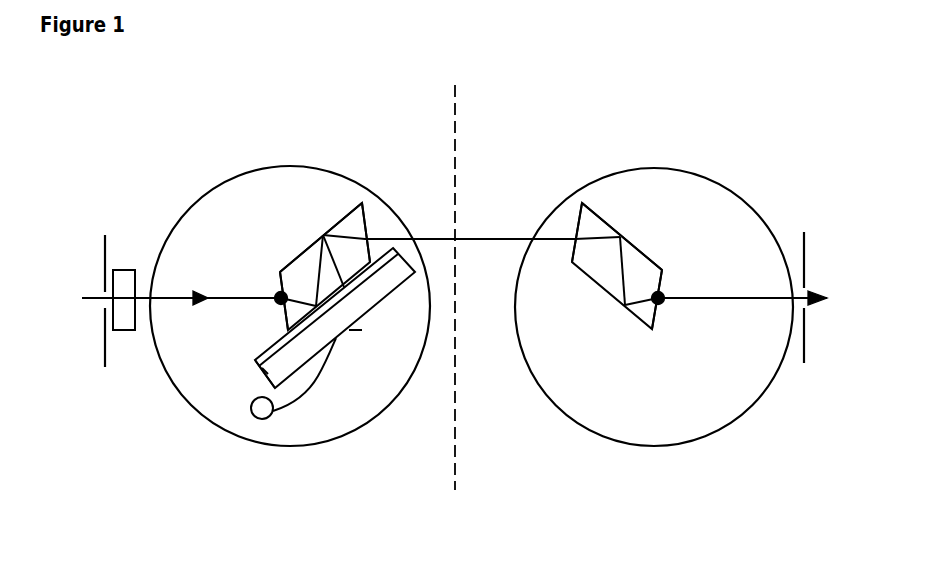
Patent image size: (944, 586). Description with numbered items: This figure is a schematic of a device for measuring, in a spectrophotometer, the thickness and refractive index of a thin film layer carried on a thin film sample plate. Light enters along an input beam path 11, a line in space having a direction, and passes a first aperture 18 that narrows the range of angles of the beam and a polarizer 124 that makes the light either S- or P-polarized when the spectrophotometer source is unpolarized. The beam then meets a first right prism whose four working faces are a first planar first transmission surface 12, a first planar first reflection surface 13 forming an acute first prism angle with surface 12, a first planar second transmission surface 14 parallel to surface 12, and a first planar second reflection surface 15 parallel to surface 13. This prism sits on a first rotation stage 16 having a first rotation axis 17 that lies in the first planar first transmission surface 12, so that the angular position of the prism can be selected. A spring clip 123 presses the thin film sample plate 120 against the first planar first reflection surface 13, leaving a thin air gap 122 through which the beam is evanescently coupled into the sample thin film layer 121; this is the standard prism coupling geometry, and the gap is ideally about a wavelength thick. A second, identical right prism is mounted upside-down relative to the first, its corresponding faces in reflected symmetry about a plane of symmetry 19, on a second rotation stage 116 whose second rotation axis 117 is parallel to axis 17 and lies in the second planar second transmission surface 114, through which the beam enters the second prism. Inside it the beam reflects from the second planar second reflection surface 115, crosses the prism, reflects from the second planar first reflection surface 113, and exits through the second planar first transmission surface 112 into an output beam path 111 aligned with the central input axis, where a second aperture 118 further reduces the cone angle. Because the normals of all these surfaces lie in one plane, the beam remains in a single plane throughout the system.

The input beam path 11 is at (177, 293).
The first planar first transmission surface 12 is at (271, 283).
The first planar first reflection surface 13 is at (327, 293).
The first planar second transmission surface 14 is at (335, 218).
The first planar second reflection surface 15 is at (370, 227).
The first rotation stage 16 is at (290, 306).
The first rotation axis 17 is at (275, 282).
The first aperture 18 is at (94, 284).
The plane of symmetry 19 is at (441, 272).
The polarizing layer 120 is at (266, 368).
The sample thin film layer 121 is at (255, 361).
The air gap 122 is at (348, 288).
The spring clip 123 is at (324, 362).
The polarizer 124 is at (120, 337).
The output light beam 111 is at (765, 290).
The second planar first transmission surface 112 is at (663, 282).
The second planar first reflection surface 113 is at (618, 287).
The second planar second transmission surface 114 is at (607, 222).
The second planar second reflection surface 115 is at (573, 223).
The second housing 116 is at (654, 307).
The second rotation axis 117 is at (667, 283).
The second aperture 118 is at (823, 316).